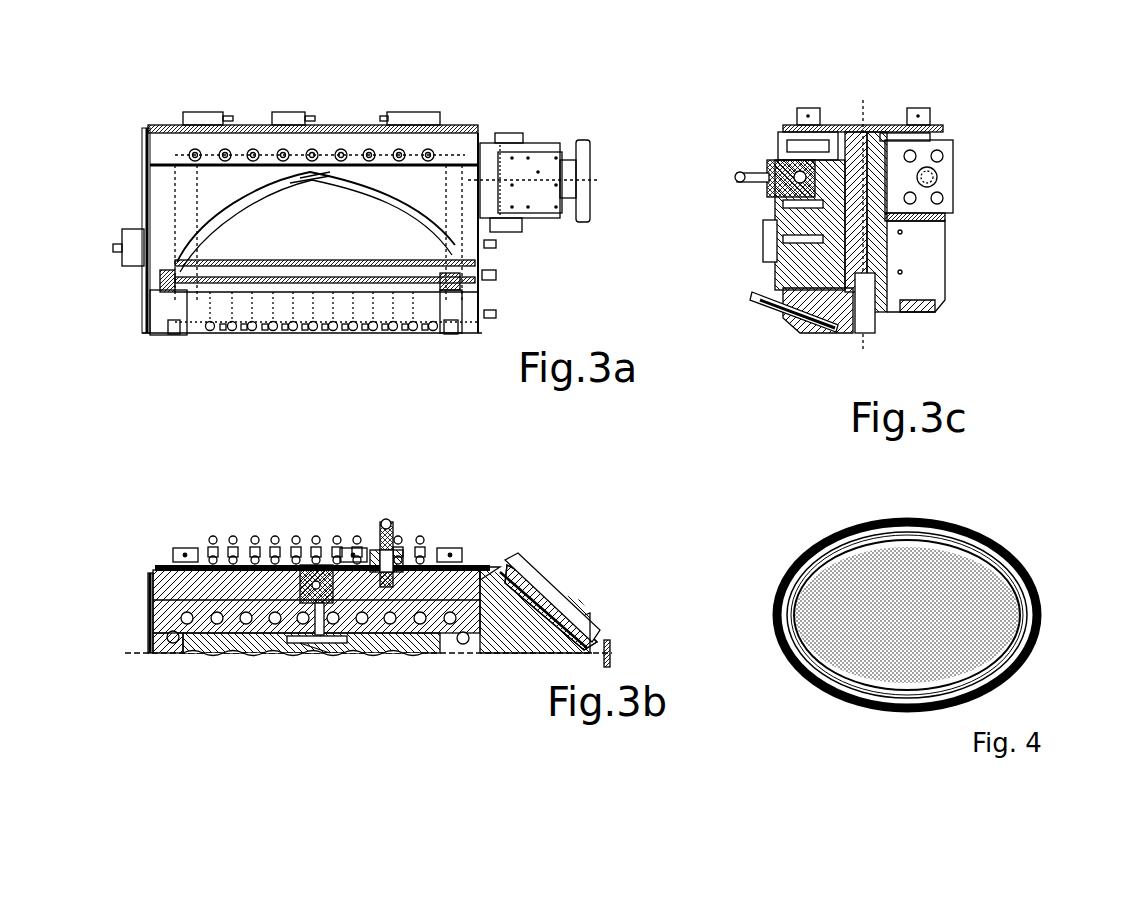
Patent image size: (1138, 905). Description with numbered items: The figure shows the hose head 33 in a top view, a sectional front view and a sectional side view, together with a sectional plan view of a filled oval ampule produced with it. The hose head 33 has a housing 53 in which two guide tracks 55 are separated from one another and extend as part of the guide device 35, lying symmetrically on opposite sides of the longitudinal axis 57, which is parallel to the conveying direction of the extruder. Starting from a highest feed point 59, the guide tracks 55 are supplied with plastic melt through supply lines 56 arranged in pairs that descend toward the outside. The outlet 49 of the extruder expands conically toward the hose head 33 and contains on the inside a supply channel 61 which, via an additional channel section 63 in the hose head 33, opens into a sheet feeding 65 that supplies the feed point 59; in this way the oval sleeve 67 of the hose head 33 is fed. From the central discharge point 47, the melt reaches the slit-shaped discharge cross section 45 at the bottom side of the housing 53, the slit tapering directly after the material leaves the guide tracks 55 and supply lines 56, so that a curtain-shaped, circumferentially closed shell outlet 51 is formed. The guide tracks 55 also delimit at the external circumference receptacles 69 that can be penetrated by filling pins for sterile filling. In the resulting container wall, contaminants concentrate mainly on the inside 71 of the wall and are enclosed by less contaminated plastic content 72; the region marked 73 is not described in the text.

In FIG. 3B, the hose head 33 is at (170, 650).
In FIG. 3A, the guide device 35 is at (265, 192).
In FIG. 3B, the guide device 35 is at (232, 640).
In FIG. 3A, the discharge cross section 45 is at (185, 340).
In FIG. 3C, the discharge cross section 45 is at (858, 335).
In FIG. 3B, the discharge cross section 45 is at (488, 590).
In FIG. 3A, the central discharge point 47 is at (300, 178).
In FIG. 3C, the central discharge point 47 is at (833, 140).
In FIG. 3B, the central discharge point 47 is at (325, 648).
In FIG. 3A, the outlet 49 is at (505, 165).
In FIG. 3C, the outlet 49 is at (945, 218).
In FIG. 3B, the outlet 49 is at (545, 580).
In FIG. 3A, the shell outlet 51 is at (315, 335).
In FIG. 3C, the shell outlet 51 is at (930, 300).
In FIG. 3A, the housing 53 is at (448, 175).
In FIG. 3C, the housing 53 is at (920, 260).
In FIG. 3B, the housing 53 is at (178, 590).
In FIG. 3A, the guide tracks 55 is at (240, 190).
In FIG. 3C, the guide tracks 55 is at (865, 128).
In FIG. 3A, the supply lines 56 is at (190, 190).
In FIG. 3B, the longitudinal axis 57 is at (607, 645).
In FIG. 3A, the feed point 59 is at (310, 179).
In FIG. 3C, the feed point 59 is at (785, 132).
In FIG. 3B, the feed point 59 is at (300, 645).
In FIG. 3B, the supply channel 61 is at (585, 620).
In FIG. 3B, the channel section 63 is at (410, 592).
In FIG. 3C, the sheet feeding 65 is at (770, 215).
In FIG. 3B, the sheet feeding 65 is at (320, 565).
In FIG. 3B, the oval sleeve 67 is at (448, 640).
In FIG. 3C, the receptacles 69 is at (937, 177).
In FIG. 3B, the receptacles 69 is at (390, 655).
In FIG. 4, the inside of the wall 71 is at (968, 532).
In FIG. 4, the less contaminated plastic content 72 is at (1022, 659).
In FIG. 4, the membrane surface 73 is at (913, 614).